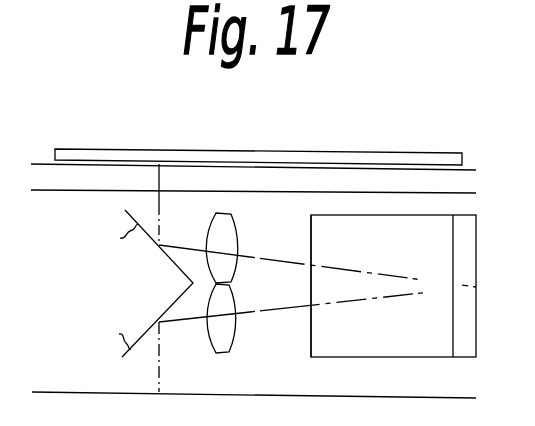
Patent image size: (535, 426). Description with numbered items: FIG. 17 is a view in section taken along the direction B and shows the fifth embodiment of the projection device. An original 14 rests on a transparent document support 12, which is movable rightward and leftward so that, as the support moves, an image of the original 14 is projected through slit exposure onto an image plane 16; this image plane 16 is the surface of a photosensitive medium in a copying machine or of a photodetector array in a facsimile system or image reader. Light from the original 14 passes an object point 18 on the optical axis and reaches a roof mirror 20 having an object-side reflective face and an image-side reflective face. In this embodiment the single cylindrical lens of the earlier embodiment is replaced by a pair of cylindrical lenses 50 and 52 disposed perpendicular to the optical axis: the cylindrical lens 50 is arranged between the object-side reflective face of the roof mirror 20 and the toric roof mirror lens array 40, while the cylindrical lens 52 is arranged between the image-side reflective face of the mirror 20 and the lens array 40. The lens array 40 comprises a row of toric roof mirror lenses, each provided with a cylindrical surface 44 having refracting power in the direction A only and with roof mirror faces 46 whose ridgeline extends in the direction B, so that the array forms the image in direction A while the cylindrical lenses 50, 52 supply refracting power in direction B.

The transparent document support 12 is at (85, 183).
The original 14 is at (228, 158).
The image plane 16 is at (84, 392).
The object point Q on optical axis 18 is at (185, 209).
The roof mirror 20 is at (149, 236).
The lens array 40 is at (405, 364).
The cylindrical surface 44 is at (311, 322).
The roof mirror faces 46 is at (476, 258).
The cylindrical lens 50 is at (232, 241).
The cylindrical lens 52 is at (232, 297).